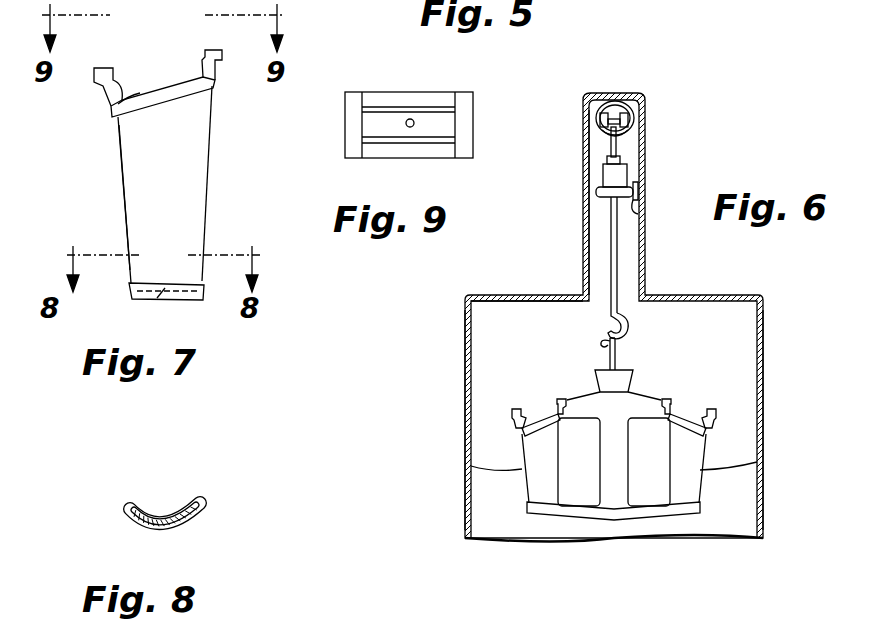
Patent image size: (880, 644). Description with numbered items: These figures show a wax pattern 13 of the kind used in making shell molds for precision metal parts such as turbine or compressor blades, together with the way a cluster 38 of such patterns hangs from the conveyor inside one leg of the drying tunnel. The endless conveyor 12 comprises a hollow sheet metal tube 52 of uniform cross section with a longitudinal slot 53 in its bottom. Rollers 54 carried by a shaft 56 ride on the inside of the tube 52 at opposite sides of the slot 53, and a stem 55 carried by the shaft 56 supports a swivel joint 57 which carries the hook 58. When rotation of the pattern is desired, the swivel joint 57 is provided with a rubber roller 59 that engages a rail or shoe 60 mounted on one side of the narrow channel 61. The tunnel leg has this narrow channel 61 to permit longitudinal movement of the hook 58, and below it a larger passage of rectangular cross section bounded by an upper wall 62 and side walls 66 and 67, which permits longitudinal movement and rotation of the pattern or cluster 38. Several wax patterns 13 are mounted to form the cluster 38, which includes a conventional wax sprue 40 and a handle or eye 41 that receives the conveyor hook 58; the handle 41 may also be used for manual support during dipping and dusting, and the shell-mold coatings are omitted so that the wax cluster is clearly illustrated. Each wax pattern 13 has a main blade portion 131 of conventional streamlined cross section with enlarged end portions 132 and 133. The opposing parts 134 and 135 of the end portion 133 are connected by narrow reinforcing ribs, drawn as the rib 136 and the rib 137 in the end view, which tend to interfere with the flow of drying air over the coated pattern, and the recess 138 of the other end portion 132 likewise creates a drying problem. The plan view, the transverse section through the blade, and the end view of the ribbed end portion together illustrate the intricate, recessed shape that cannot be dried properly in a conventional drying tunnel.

In FIG. 6, the endless conveyor 12 is at (588, 102).
In FIG. 7, the wax pattern 13 is at (208, 192).
In FIG. 8, the wax pattern 13 is at (222, 503).
In FIG. 6, the wax pattern 13 is at (528, 470).
In FIG. 6, the cluster 38 is at (553, 380).
In FIG. 6, the wax sprue 40 is at (640, 395).
In FIG. 6, the handle or eye 41 is at (617, 363).
In FIG. 6, the hollow sheet metal tube 52 is at (638, 101).
In FIG. 6, the longitudinal slot 53 is at (628, 135).
In FIG. 6, the rollers 54 is at (626, 113).
In FIG. 6, the stem 55 is at (611, 148).
In FIG. 6, the shaft 56 is at (632, 122).
In FIG. 6, the swivel joint 57 is at (612, 178).
In FIG. 6, the hook 58 is at (626, 322).
In FIG. 6, the rubber roller 59 is at (600, 192).
In FIG. 6, the rail or shoe 60 is at (639, 205).
In FIG. 6, the narrow channel 61 is at (600, 236).
In FIG. 6, the upper wall 62 is at (530, 295).
In FIG. 6, the side wall 66 is at (465, 432).
In FIG. 6, the side wall 67 is at (763, 432).
In FIG. 7, the main blade portion 131 is at (121, 184).
In FIG. 8, the main blade portion 131 is at (148, 507).
In FIG. 7, the end portion 132 is at (180, 300).
In FIG. 8, the end portion 132 is at (185, 500).
In FIG. 9, the end portion 133 is at (436, 92).
In FIG. 7, the opposing part 134 is at (100, 67).
In FIG. 9, the opposing part 134 is at (352, 115).
In FIG. 7, the opposing part 135 is at (208, 50).
In FIG. 9, the opposing part 135 is at (465, 137).
In FIG. 9, the upper channel 136 is at (405, 105).
In FIG. 7, the reinforcing rib 137 is at (177, 75).
In FIG. 9, the reinforcing rib 137 is at (388, 145).
In FIG. 7, the recess 138 is at (156, 303).